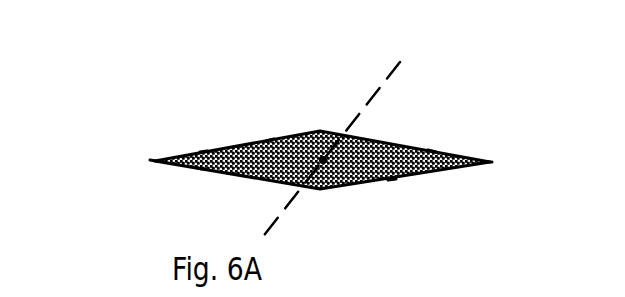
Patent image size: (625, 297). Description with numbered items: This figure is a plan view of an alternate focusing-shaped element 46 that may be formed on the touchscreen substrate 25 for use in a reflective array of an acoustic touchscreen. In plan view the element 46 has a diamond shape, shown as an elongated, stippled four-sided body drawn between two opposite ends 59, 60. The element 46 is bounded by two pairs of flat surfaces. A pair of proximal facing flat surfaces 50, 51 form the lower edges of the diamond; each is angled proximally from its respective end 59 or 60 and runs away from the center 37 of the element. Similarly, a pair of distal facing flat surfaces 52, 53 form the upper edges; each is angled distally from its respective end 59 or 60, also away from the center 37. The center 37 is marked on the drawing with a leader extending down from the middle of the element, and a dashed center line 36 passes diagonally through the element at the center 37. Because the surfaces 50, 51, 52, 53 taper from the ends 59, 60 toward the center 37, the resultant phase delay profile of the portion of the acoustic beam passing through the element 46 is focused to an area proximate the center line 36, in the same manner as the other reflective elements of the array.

The touchscreen substrate 25 is at (167, 72).
The center line 36 is at (375, 101).
The center 37 is at (325, 161).
The focusing-shaped element 46 is at (270, 140).
The proximal facing flat surface 50 is at (198, 168).
The proximal facing flat surface 51 is at (392, 182).
The distal facing flat surface 52 is at (204, 151).
The distal facing flat surface 53 is at (432, 150).
The end 59 is at (152, 160).
The end 60 is at (490, 162).